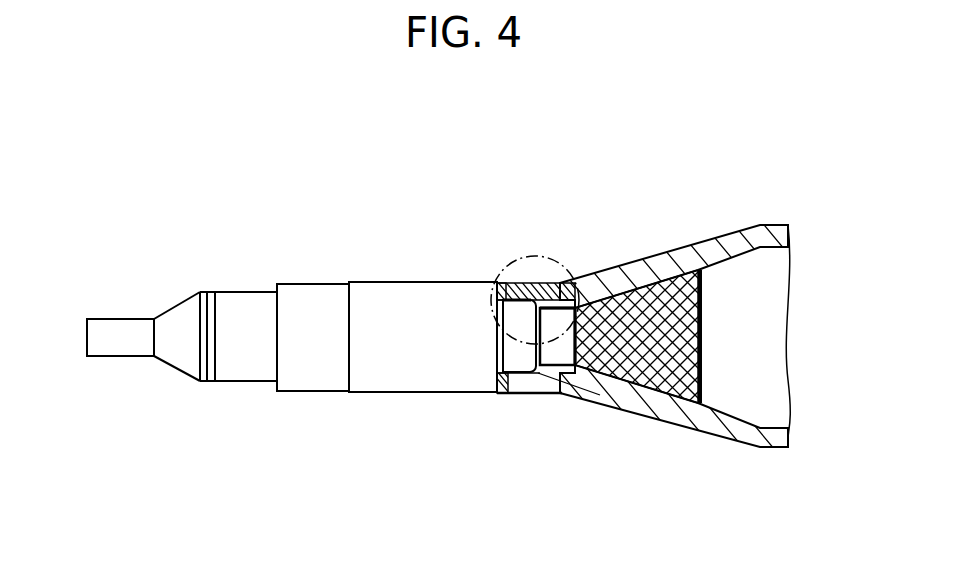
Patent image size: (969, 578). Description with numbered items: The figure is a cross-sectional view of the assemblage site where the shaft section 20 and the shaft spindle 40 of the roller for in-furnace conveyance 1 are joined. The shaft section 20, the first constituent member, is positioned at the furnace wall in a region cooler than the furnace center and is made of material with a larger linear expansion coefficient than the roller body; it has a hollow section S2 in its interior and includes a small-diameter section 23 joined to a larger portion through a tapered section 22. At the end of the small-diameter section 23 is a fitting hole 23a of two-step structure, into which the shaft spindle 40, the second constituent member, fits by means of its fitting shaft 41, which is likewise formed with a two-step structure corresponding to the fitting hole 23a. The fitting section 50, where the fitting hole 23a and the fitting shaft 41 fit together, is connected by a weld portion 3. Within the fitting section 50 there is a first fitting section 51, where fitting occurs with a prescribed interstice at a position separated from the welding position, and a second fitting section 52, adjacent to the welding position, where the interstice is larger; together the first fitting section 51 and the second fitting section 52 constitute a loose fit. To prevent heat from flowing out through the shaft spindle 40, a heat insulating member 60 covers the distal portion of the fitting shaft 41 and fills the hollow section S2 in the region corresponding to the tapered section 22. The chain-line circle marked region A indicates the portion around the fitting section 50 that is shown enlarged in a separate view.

The roller for in-furnace conveyance 1 is at (130, 213).
The weld portion 3 is at (497, 286).
The shaft section 20 is at (712, 250).
The tapered section 22 is at (680, 432).
The small-diameter section 23 is at (531, 400).
The fitting hole 23a is at (500, 370).
The shaft spindle 40 is at (400, 300).
The fitting shaft 41 is at (553, 352).
The fitting section 50 is at (593, 186).
The first fitting section 51 is at (553, 310).
The second fitting section 52 is at (524, 300).
The heat insulating member 60 is at (628, 363).
The region A is at (568, 268).
The hollow section S2 is at (760, 352).